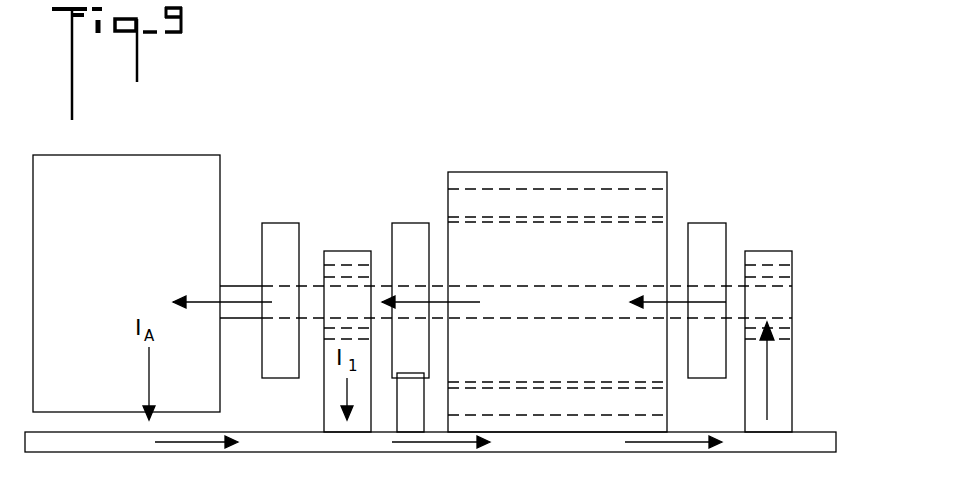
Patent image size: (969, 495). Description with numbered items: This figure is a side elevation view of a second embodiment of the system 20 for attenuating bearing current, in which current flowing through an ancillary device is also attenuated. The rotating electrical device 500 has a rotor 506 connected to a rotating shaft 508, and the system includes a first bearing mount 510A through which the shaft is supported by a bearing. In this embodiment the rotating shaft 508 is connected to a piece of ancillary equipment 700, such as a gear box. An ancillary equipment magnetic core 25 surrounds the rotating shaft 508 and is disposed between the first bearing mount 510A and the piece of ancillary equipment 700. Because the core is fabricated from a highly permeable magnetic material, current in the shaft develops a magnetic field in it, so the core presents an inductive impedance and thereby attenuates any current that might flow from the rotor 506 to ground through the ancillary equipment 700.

The system 20 is at (682, 78).
The piece of ancillary equipment 700 is at (210, 192).
The ancillary equipment magnetic core 25 is at (278, 245).
The rotating shaft 508 is at (310, 286).
The bearing mount 510A is at (326, 397).
The rotating electrical device 500 is at (557, 275).
The rotor 506 is at (538, 244).